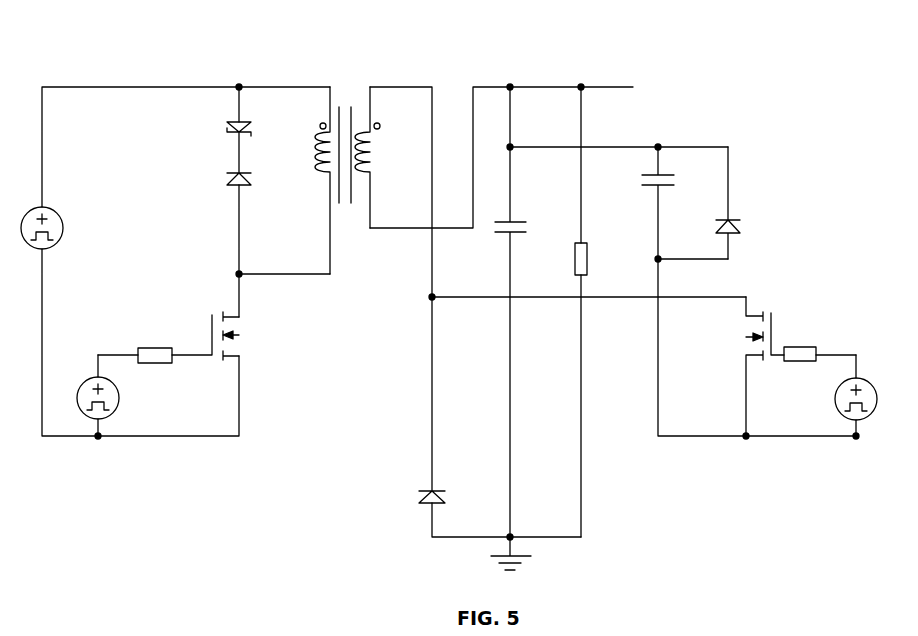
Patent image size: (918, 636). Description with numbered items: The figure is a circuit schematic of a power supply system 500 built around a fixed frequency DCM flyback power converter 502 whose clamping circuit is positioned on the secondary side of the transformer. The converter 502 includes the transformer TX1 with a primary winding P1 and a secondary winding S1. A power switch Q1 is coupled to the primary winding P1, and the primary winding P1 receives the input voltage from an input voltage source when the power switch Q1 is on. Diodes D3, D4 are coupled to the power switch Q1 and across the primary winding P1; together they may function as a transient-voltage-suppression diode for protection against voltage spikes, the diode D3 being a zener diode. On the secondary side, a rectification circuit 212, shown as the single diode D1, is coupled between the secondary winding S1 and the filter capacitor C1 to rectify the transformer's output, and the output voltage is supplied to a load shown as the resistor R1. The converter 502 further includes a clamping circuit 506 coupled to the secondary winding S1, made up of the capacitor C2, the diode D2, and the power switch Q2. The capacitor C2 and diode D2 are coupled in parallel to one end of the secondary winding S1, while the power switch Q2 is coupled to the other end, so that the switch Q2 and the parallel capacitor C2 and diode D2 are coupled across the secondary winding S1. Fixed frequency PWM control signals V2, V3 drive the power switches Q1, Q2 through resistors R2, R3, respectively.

The power supply system 500 is at (119, 40).
The flyback power converter 502 is at (405, 79).
The clamping circuit 506 is at (747, 283).
The rectification circuit 212 is at (361, 494).
The transformer TX1 is at (353, 180).
The primary winding P1 is at (308, 180).
The secondary winding S1 is at (380, 157).
The diode D1 is at (413, 498).
The diode D2 is at (744, 203).
The zener diode D3 is at (256, 128).
The diode D4 is at (223, 178).
The filter capacitor C1 is at (527, 312).
The capacitor C2 is at (749, 291).
The resistor R1 is at (595, 312).
The resistor R2 is at (135, 369).
The resistor R3 is at (820, 367).
The power switch Q1 is at (205, 351).
The power switch Q2 is at (765, 366).
The PWM control signal V2 is at (91, 390).
The PWM control signal V3 is at (851, 395).